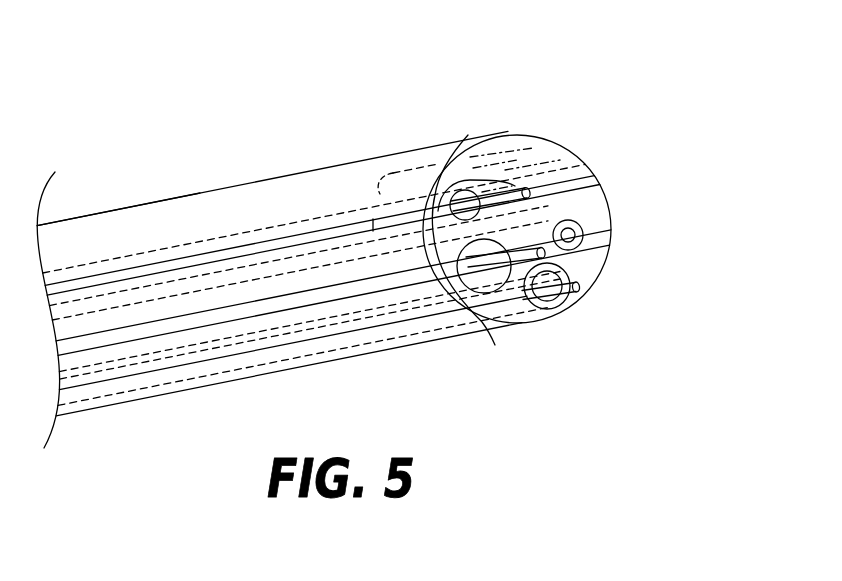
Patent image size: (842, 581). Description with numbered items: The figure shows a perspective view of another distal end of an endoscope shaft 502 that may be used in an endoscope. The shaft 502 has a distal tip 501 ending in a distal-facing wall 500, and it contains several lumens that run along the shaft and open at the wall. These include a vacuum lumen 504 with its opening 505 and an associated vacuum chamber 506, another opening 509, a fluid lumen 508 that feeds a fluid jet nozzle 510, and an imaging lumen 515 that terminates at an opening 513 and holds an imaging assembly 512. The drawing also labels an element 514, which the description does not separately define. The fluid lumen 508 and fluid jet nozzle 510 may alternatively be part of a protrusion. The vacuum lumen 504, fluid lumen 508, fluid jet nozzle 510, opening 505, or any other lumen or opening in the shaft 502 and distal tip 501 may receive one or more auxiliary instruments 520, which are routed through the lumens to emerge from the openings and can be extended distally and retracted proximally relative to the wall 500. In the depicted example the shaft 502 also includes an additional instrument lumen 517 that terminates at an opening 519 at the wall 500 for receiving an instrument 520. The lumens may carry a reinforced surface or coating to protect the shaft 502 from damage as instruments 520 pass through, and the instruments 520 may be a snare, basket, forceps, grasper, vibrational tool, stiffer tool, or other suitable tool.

The distal-facing wall 500 is at (592, 265).
The distal tip 501 is at (377, 93).
The shaft 502 is at (187, 156).
The vacuum lumen 504 is at (390, 212).
The opening 505 is at (468, 135).
The vacuum chamber 506 is at (560, 175).
The fluid lumen 508 is at (525, 280).
The opening 509 is at (515, 147).
The fluid jet nozzle 510 is at (549, 310).
The imaging assembly 512 is at (584, 232).
The opening 513 is at (585, 222).
The lead wire 514 is at (534, 185).
The imaging lumen 515 is at (580, 247).
The additional instrument lumen 517 is at (303, 323).
The opening 519 is at (463, 287).
The auxiliary instrument 520 is at (503, 262).